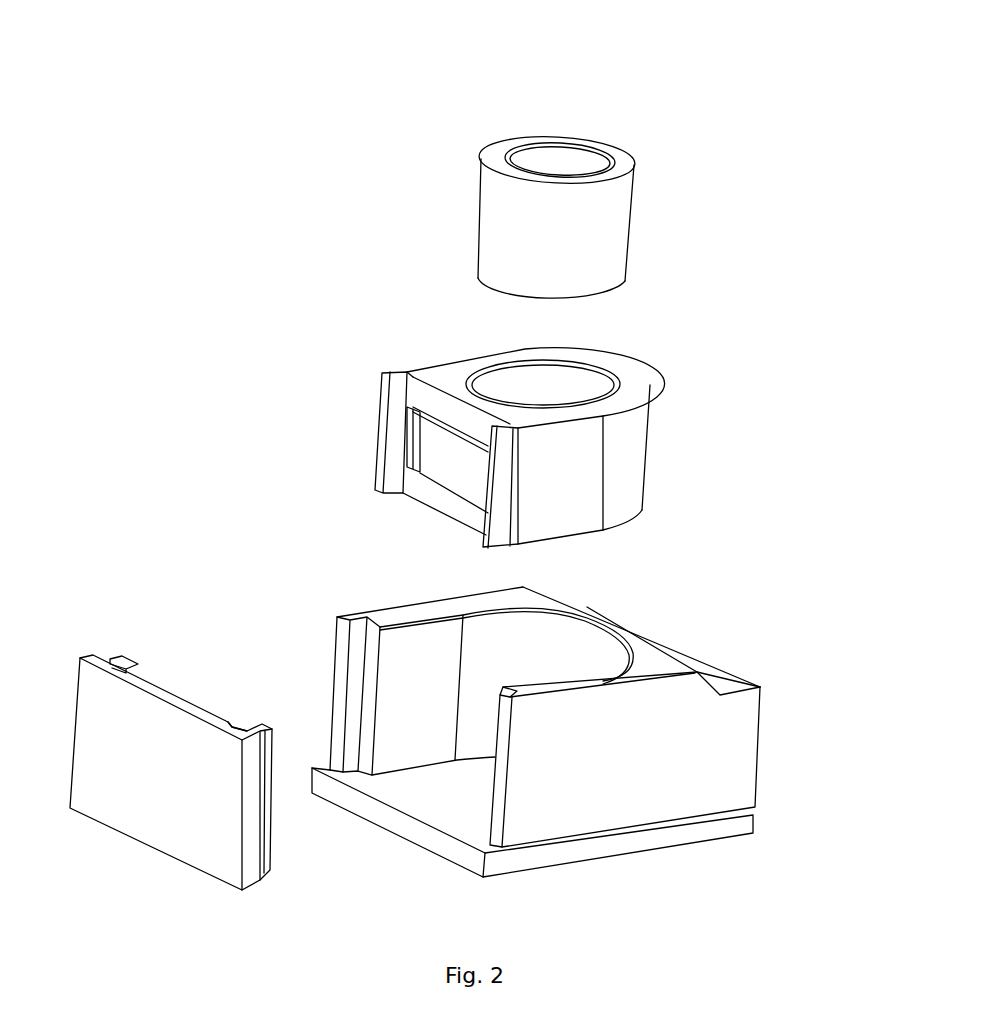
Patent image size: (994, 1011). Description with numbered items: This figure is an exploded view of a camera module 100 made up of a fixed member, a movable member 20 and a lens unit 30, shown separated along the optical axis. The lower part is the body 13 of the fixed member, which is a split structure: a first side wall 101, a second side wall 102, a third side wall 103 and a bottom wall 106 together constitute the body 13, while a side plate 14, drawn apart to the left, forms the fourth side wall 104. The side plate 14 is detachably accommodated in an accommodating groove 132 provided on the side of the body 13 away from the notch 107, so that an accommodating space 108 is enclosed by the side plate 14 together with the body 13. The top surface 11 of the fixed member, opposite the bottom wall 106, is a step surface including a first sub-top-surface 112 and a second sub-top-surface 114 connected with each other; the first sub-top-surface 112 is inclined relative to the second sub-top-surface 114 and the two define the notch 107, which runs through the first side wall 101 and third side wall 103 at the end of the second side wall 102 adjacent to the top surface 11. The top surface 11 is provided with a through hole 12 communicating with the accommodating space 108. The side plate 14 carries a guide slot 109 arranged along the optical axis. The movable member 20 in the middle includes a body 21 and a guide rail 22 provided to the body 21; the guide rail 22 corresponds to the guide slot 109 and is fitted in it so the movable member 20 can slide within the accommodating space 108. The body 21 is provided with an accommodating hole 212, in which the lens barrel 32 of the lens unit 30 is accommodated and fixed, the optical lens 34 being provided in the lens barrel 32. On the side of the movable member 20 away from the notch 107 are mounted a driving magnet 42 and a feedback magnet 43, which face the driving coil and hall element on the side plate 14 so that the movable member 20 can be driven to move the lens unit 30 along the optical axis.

The camera module 100 is at (466, 57).
The lens unit 30 is at (708, 136).
The lens barrel 32 is at (597, 217).
The optical lens 34 is at (583, 165).
The movable member 20 is at (735, 391).
The accommodating hole 212 is at (590, 388).
The body 21 is at (590, 495).
The guide rail 22 is at (383, 414).
The driving magnet 42 is at (450, 465).
The feedback magnet 43 is at (407, 453).
The body 13 is at (774, 520).
The top surface 11 is at (895, 591).
The first sub-top-surface 112 is at (740, 687).
The second sub-top-surface 114 is at (740, 685).
The first side wall 101 is at (435, 607).
The second side wall 102 is at (647, 633).
The notch 107 is at (590, 613).
The through hole 12 is at (610, 652).
The third side wall 103 is at (725, 778).
The fourth side wall 104 is at (183, 830).
The side plate 14 is at (181, 779).
The guide slot 109 is at (236, 721).
The bottom wall 106 is at (477, 855).
The accommodating space 108 is at (475, 790).
The accommodating groove 132 is at (362, 770).